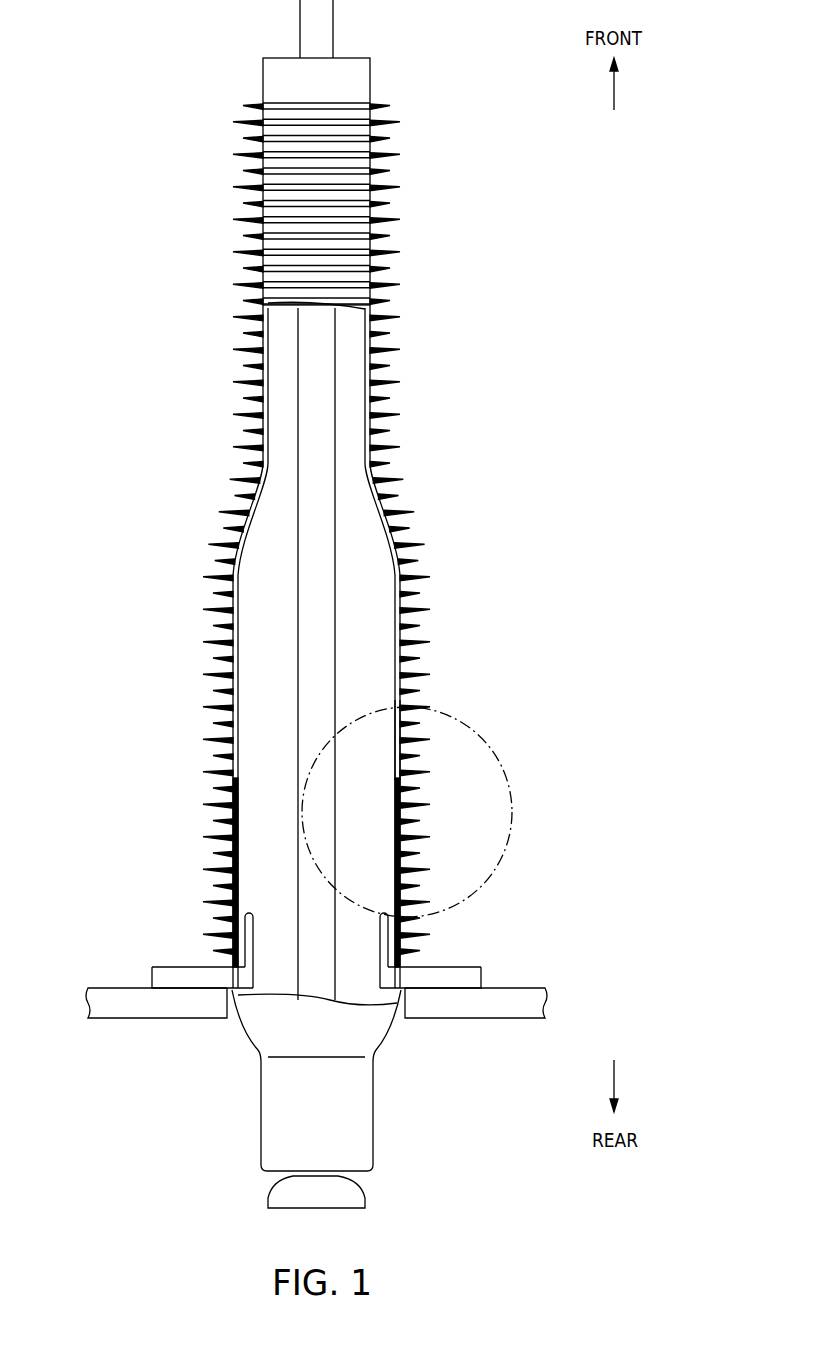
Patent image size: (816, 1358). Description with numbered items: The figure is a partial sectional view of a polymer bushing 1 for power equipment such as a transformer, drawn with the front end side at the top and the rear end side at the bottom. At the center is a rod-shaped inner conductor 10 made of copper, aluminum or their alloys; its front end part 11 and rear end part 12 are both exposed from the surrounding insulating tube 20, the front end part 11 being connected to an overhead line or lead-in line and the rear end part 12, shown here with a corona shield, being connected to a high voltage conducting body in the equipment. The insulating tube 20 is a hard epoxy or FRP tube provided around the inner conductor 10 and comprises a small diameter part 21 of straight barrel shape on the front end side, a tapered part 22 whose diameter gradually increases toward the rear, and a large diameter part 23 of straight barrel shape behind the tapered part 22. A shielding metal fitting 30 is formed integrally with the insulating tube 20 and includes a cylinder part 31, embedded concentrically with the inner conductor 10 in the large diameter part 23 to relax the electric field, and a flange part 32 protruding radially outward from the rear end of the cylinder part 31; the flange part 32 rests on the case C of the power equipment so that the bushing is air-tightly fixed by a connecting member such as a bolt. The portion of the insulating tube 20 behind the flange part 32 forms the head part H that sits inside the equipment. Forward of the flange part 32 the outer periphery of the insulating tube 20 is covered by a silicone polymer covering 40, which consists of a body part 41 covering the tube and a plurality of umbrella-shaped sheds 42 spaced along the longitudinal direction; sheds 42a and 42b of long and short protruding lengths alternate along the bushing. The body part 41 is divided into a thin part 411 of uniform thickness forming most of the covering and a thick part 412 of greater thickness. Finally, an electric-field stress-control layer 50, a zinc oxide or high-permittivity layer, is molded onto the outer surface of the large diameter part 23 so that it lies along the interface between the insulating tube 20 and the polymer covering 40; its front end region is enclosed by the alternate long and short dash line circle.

The polymer bushing 1 is at (463, 211).
The inner conductor 10 is at (325, 525).
The front end part 11 is at (323, 27).
The rear end part 12 is at (355, 1192).
The insulating tube 20 is at (310, 645).
The small diameter part 21 is at (283, 372).
The tapered part 22 is at (257, 535).
The large diameter part 23 is at (257, 729).
The shielding metal fitting 30 is at (370, 949).
The cylinder part 31 is at (387, 926).
The flange part 32 is at (480, 976).
The polymer covering 40 is at (533, 323).
The body part 41 is at (372, 407).
The umbrella-shaped sheds 42 is at (486, 293).
The umbrella-shaped shed 42a is at (383, 320).
The umbrella-shaped shed 42b is at (383, 368).
The electric-field stress-control layer 50 is at (402, 805).
The thin part 411 is at (402, 733).
The thick part 412 is at (402, 763).
The head part H is at (233, 1106).
The case C is at (483, 1018).